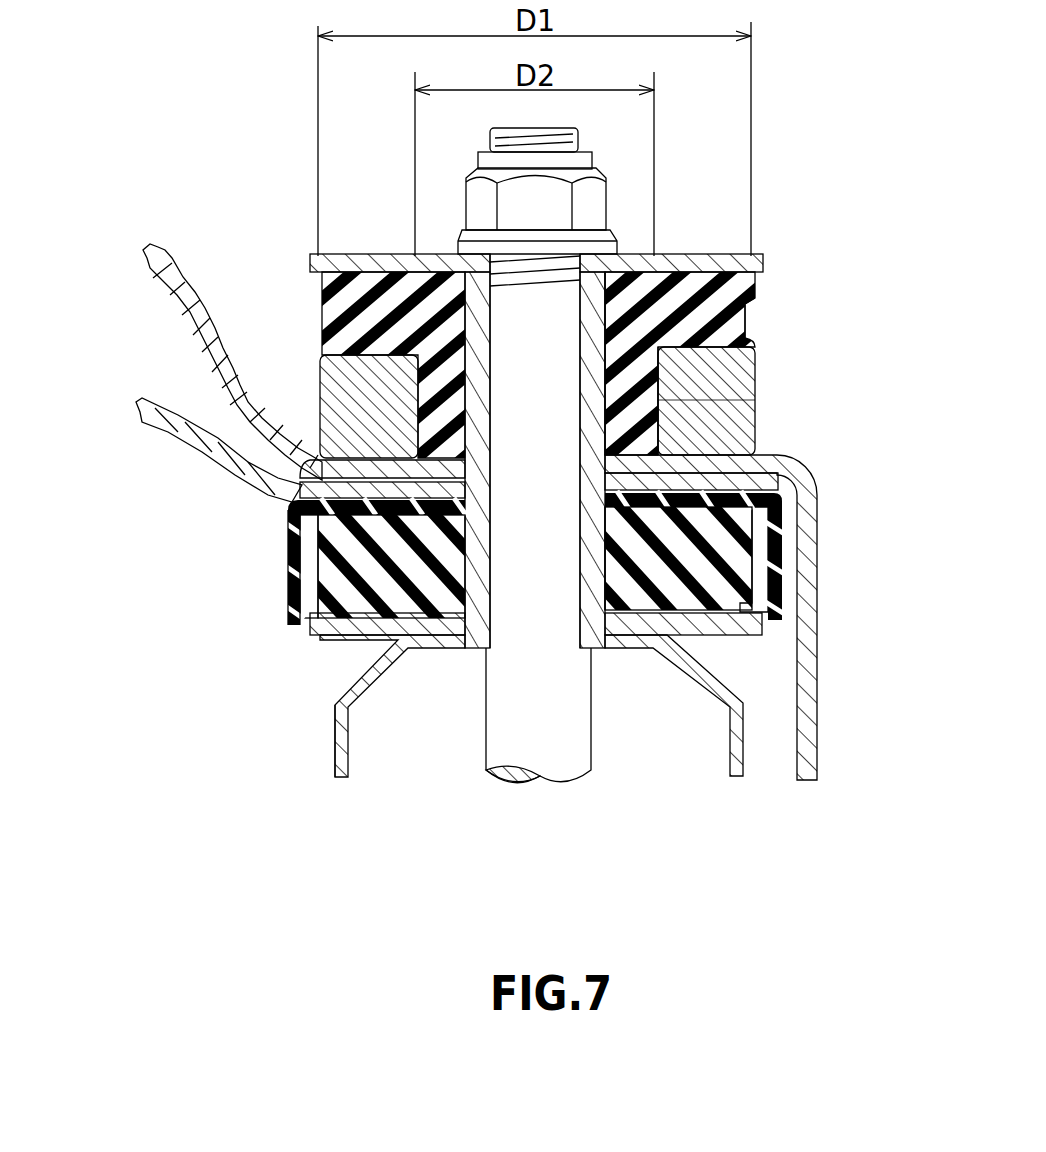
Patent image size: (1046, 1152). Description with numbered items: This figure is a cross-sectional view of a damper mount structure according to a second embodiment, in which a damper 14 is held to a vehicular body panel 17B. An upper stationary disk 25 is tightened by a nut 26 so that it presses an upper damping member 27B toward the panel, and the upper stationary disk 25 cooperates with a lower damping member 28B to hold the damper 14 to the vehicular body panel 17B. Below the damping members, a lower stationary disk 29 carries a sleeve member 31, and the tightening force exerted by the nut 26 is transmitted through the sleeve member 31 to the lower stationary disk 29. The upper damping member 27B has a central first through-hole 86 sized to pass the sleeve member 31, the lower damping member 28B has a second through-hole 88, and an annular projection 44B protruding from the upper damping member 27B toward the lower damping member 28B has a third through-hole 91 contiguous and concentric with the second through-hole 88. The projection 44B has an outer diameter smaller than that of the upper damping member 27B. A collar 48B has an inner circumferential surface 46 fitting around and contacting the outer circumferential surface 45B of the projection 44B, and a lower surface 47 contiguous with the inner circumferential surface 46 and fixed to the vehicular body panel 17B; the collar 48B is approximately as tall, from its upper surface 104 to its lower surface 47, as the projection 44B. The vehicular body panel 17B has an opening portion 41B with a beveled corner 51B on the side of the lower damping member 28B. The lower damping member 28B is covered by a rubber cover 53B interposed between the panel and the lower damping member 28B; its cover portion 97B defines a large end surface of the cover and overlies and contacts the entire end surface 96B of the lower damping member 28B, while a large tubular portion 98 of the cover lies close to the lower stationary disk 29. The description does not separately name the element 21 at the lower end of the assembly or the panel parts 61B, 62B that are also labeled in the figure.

The damper 14 is at (285, 845).
The vehicular body panel 17B is at (112, 296).
The bolt 21 is at (565, 785).
The upper stationary disk 25 is at (352, 254).
The nut 26 is at (468, 206).
The upper damping member 27B is at (322, 300).
The lower damping member 28B is at (322, 488).
The lower stationary disk 29 is at (357, 640).
The sleeve member 31 is at (625, 648).
The opening portion 41B is at (457, 650).
The annular projection 44B is at (740, 358).
The outer circumferential surface 45B is at (732, 406).
The inner circumferential surface 46 is at (650, 380).
The lower surface 47 is at (792, 466).
The collar 48B is at (320, 385).
The beveled corner 51B is at (445, 565).
The rubber cover 53B is at (288, 575).
The first arm 61B is at (158, 420).
The second arm 62B is at (185, 248).
The first through-hole 86 is at (590, 332).
The second through-hole 88 is at (640, 572).
The third through-hole 91 is at (603, 407).
The end surface 96B is at (410, 640).
The cover portion 97B is at (325, 484).
The large tubular portion 98 is at (292, 605).
The upper surface 104 is at (750, 325).